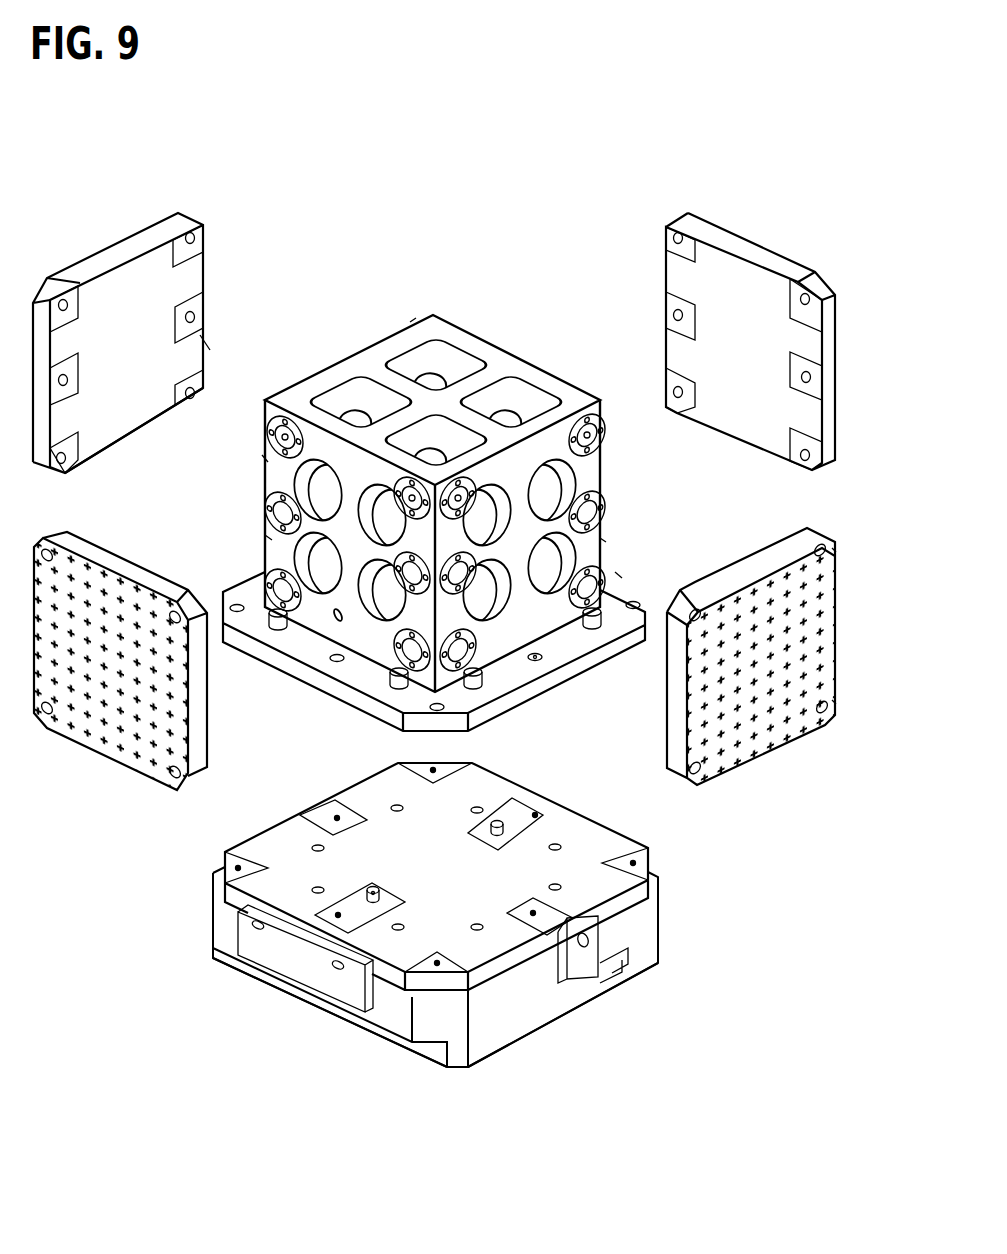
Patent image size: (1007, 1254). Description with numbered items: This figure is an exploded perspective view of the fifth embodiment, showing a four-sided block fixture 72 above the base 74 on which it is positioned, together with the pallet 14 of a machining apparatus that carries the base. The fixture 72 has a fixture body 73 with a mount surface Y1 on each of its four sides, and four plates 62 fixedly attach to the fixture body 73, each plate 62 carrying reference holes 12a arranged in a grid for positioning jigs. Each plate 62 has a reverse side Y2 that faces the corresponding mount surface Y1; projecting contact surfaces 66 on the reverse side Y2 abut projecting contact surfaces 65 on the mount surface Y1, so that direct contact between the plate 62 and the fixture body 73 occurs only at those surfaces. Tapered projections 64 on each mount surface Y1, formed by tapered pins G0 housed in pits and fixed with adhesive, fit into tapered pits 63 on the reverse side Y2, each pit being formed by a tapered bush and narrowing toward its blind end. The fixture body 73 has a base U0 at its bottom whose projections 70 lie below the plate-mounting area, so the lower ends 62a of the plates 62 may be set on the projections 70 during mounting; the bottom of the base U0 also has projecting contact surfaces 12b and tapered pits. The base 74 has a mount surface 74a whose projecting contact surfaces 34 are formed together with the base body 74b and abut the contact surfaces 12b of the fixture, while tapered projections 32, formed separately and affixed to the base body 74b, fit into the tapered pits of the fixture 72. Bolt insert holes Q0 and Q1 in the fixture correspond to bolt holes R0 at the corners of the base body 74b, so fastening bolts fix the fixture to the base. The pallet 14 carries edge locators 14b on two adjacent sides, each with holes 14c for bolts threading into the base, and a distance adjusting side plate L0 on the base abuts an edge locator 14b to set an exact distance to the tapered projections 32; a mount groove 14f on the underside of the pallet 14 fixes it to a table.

The plate 62 is at (115, 253).
The lower end of plate 62a is at (100, 466).
The tapered pit 63 is at (70, 380).
The projecting contact surface 66 is at (198, 240).
The projecting contact surface 65 is at (400, 495).
The tapered projection 64 is at (278, 512).
The fixture 72 is at (545, 361).
The fixture body 73 is at (500, 338).
The projection 70 is at (276, 633).
The projecting contact surface 12b is at (455, 724).
The reference hole 12a is at (838, 572).
The pallet 14 is at (663, 943).
The base 74 is at (650, 856).
The mount surface 74a is at (510, 950).
The base body 74b is at (393, 985).
The edge locator 14b is at (333, 985).
The hole 14c is at (256, 935).
The mount groove 14f is at (612, 966).
The projecting contact surface 34 is at (300, 815).
The tapered projection 32 is at (458, 860).
The mount surface Y1 is at (268, 537).
The reverse side Y2 is at (211, 348).
The tapered pin G0 is at (265, 460).
The base U0 is at (620, 575).
The bolt insert hole Q0 is at (836, 545).
The bolt insert hole Q1 is at (542, 664).
The bolt hole R0 is at (428, 770).
The distance adjusting side plate L0 is at (366, 890).